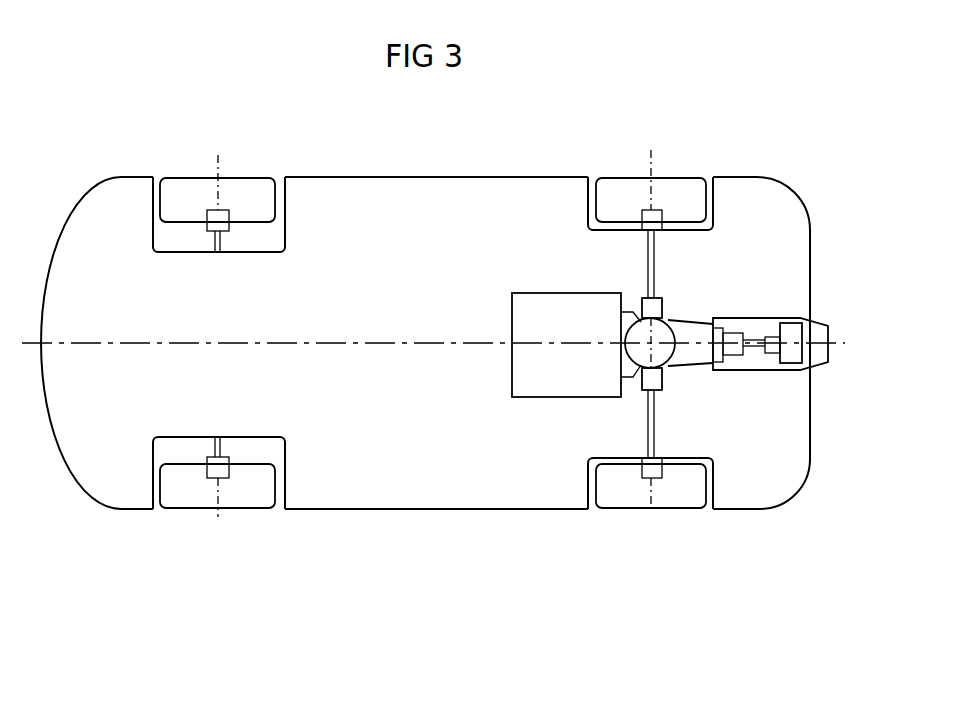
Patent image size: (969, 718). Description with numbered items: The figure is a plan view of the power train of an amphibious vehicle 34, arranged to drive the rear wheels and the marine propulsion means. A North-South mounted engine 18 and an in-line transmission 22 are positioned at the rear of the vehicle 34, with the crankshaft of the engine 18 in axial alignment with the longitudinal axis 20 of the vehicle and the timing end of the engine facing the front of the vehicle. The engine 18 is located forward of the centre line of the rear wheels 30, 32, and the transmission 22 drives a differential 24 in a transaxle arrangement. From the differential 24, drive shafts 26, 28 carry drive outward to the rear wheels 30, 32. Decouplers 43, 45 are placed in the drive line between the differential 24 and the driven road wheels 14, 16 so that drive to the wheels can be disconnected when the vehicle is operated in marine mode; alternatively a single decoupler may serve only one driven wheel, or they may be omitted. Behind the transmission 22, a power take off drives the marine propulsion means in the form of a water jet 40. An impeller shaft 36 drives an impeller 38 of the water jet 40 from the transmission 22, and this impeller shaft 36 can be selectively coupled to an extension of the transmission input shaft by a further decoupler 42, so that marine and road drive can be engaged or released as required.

The driven road wheel 14 is at (190, 195).
The driven road wheel 16 is at (193, 497).
The engine 18 is at (527, 312).
The axis of the vehicle 20 is at (77, 343).
The transmission 22 is at (737, 333).
The differential 24 is at (692, 333).
The drive shaft 26 is at (653, 258).
The drive shaft 28 is at (652, 423).
The rear wheel 30 is at (620, 202).
The rear wheel 32 is at (665, 485).
The amphibious vehicle 34 is at (391, 313).
The impeller shaft 36 is at (753, 347).
The impeller 38 is at (806, 328).
The water jet 40 is at (794, 332).
The decoupler 42 is at (765, 327).
The decoupler 43 is at (662, 333).
The decoupler 45 is at (658, 382).